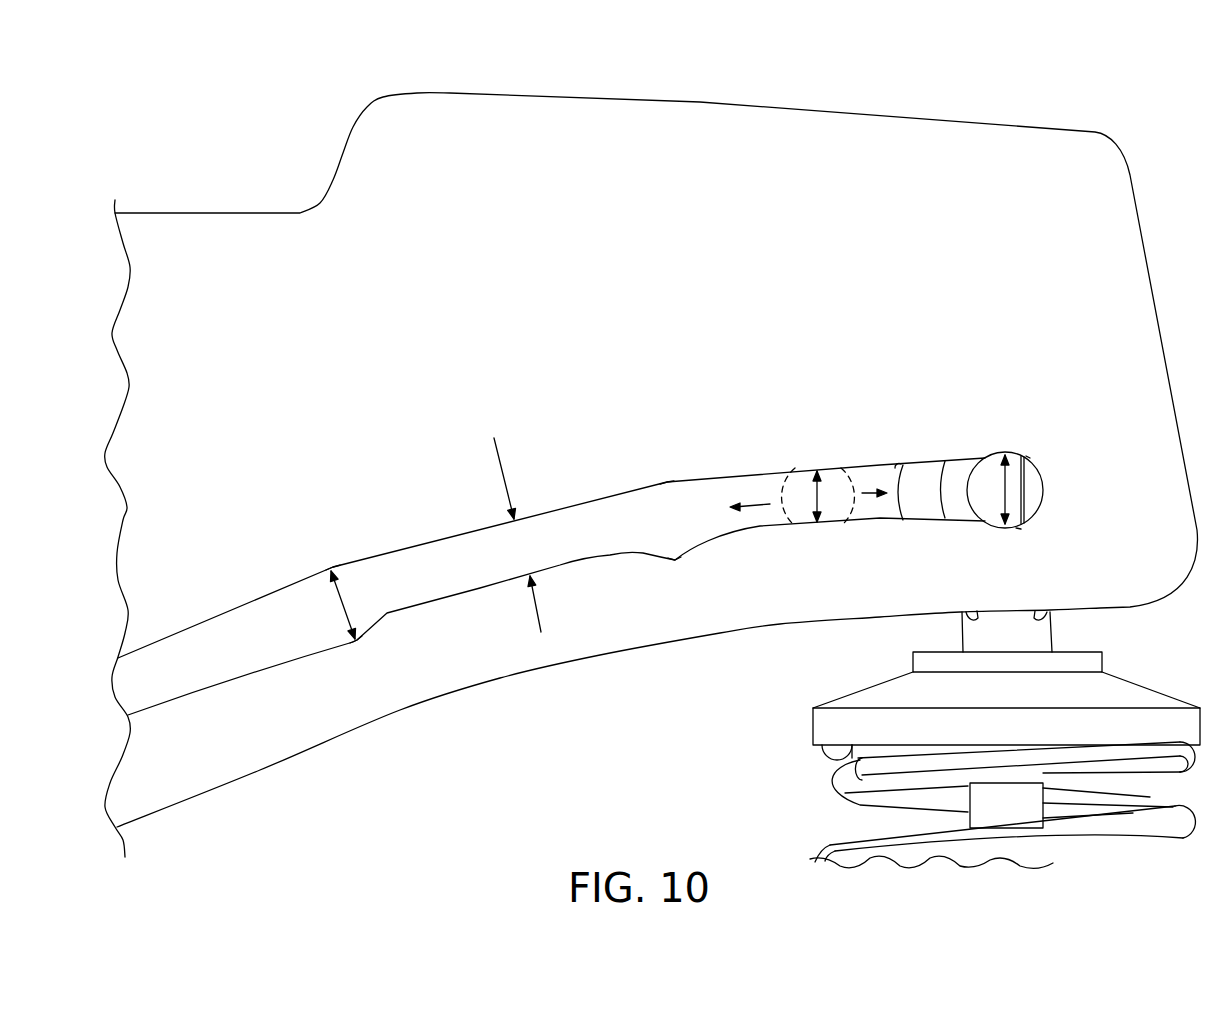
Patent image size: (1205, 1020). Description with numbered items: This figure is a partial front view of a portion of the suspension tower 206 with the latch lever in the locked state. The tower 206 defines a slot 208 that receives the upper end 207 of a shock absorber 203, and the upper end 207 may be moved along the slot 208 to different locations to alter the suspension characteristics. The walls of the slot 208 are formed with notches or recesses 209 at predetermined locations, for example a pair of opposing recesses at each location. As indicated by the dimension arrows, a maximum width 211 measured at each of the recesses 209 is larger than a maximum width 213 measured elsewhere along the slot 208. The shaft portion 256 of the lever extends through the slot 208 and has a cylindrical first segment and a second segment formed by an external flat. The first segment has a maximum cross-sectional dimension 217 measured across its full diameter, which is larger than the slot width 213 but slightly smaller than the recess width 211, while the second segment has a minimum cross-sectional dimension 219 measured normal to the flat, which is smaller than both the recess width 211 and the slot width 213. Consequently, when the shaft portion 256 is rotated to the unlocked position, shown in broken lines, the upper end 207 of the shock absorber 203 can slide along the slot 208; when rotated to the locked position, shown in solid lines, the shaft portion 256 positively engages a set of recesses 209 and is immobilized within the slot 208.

The suspension tower 206 is at (632, 98).
The slot 208 is at (588, 515).
The recess 209 is at (333, 567).
The maximum width at recesses 211 is at (343, 604).
The maximum width of slot 213 is at (505, 438).
The minimum cross-sectional dimension 219 is at (815, 497).
The shaft portion 256 is at (847, 465).
The upper end 207 is at (897, 466).
The maximum cross-sectional dimension 217 is at (1000, 480).
The shock absorber 203 is at (808, 733).